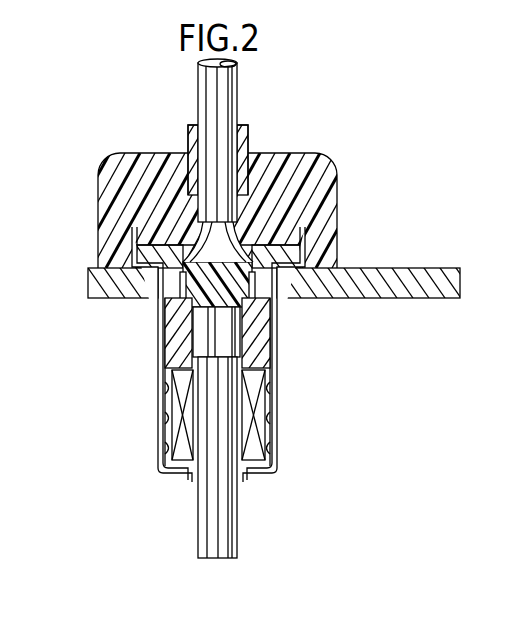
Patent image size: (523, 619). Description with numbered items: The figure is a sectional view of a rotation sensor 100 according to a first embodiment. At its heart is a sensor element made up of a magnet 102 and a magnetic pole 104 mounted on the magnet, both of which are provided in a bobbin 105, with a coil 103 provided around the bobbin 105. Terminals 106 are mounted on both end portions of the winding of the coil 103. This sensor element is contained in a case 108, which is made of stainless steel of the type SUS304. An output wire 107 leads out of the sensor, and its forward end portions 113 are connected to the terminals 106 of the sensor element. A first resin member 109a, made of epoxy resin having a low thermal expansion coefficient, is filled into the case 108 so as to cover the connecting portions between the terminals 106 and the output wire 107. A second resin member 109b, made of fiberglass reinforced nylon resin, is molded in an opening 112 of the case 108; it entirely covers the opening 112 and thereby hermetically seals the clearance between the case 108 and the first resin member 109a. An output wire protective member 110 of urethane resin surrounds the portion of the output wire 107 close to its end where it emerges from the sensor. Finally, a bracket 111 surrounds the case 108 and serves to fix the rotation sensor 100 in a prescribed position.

The rotation sensor 100 is at (368, 136).
The magnet 102 is at (156, 350).
The coil 103 is at (278, 424).
The magnetic pole 104 is at (240, 533).
The bobbin 105 is at (172, 342).
The terminals 106 is at (153, 286).
The output wire 107 is at (240, 85).
The case 108 is at (157, 408).
The first resin member 109a is at (312, 257).
The second resin member 109b is at (312, 183).
The output wire protective member 110 is at (250, 130).
The bracket 111 is at (380, 268).
The opening 112 is at (182, 264).
The forward end portions 113 is at (196, 237).